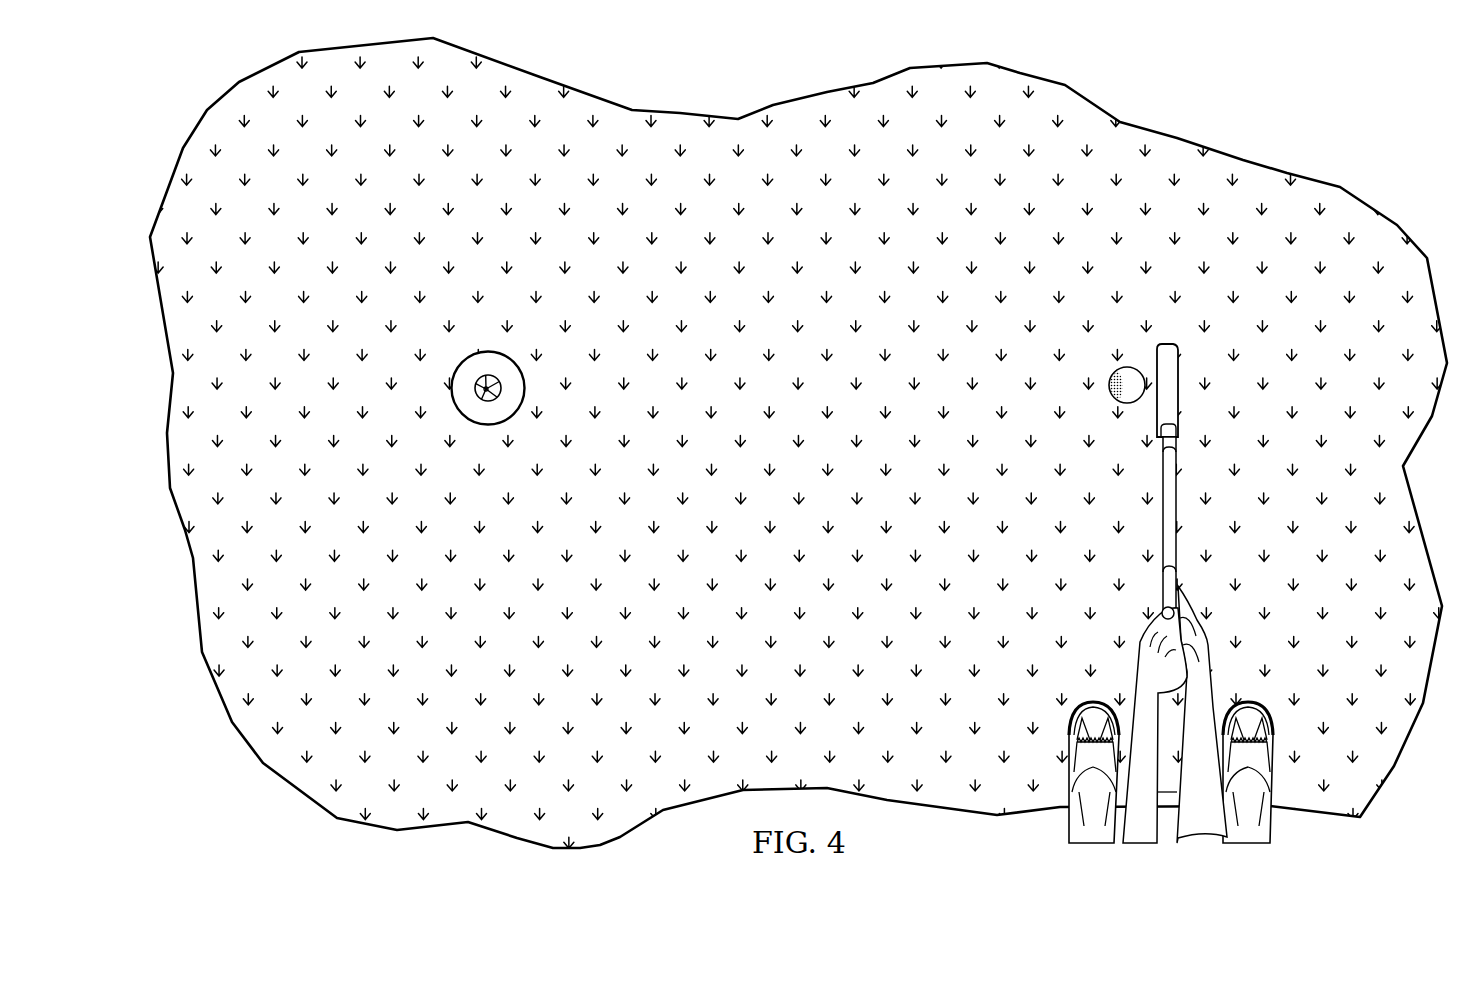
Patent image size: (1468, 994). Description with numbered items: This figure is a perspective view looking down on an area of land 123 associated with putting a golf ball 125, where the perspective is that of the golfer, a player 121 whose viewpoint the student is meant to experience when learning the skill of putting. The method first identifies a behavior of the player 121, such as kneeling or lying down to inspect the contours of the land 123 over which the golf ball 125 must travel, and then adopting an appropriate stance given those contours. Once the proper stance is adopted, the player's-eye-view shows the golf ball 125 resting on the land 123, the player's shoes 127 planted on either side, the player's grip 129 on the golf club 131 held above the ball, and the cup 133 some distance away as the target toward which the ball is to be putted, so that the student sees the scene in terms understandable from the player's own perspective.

The player 121 is at (1140, 709).
The land 123 is at (776, 554).
The golf ball 125 is at (1110, 380).
The player's shoes 127 is at (1070, 720).
The player's grip 129 is at (1203, 642).
The golf club 131 is at (1175, 390).
The cup 133 is at (515, 360).